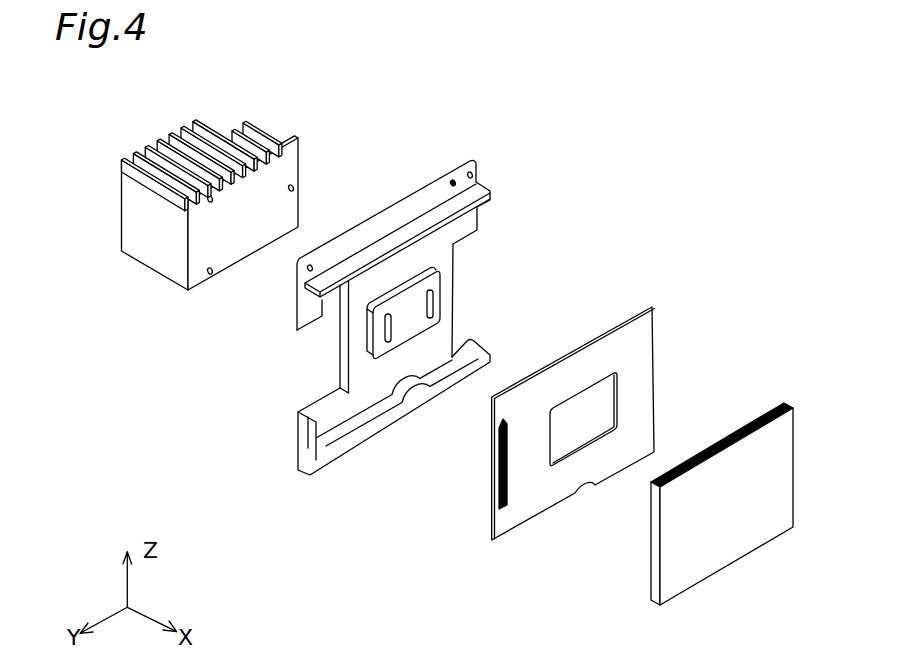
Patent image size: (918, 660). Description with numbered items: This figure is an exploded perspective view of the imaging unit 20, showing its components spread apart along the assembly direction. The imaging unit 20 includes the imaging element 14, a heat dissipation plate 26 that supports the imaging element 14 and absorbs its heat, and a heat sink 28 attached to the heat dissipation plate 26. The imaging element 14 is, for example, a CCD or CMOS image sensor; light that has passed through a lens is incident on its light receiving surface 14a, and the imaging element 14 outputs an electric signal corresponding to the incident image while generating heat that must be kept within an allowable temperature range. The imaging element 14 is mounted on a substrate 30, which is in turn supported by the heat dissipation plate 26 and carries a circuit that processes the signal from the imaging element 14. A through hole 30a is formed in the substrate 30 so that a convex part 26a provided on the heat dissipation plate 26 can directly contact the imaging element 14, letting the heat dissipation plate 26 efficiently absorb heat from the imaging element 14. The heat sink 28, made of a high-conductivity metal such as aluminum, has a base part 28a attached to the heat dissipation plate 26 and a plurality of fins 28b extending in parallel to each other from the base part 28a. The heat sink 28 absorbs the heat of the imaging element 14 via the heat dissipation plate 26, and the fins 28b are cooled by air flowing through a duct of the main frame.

The imaging element 14 is at (738, 483).
The light receiving surface 14a is at (737, 530).
The imaging unit 20 is at (669, 179).
The heat dissipation plate 26 is at (416, 296).
The convex part 26a is at (436, 302).
The heat sink 28 is at (212, 188).
The base part 28a is at (270, 147).
The fins 28b is at (156, 147).
The substrate 30 is at (608, 423).
The through hole 30a is at (585, 432).